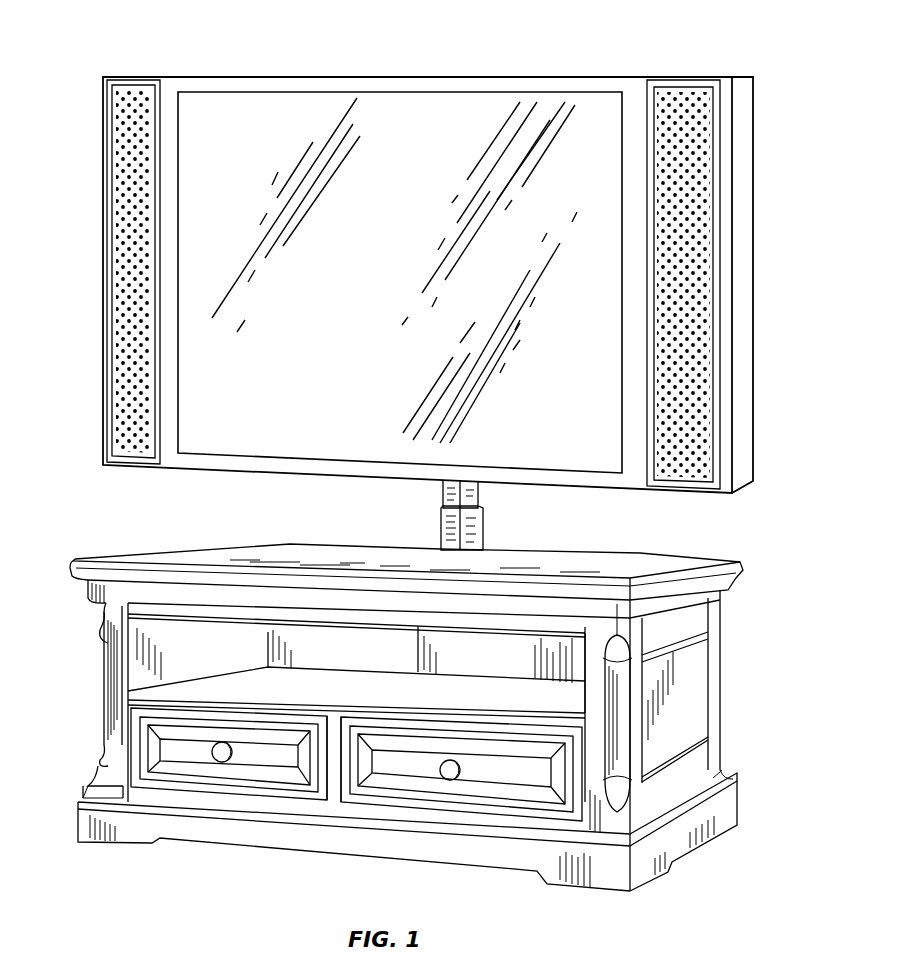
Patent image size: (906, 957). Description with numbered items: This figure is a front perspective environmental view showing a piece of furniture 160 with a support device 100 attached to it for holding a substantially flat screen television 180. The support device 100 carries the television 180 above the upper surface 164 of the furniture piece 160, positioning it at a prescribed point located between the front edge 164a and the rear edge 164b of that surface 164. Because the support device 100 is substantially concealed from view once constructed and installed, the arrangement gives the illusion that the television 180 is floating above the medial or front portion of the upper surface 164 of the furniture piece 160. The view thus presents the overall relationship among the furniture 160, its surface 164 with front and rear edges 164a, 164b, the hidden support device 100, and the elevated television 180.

The support device 100 is at (398, 517).
The flat screen television 180 is at (537, 48).
The piece of furniture 160 is at (748, 684).
The surface 164 is at (637, 565).
The front edge 164a is at (167, 578).
The rear edge 164b is at (300, 548).